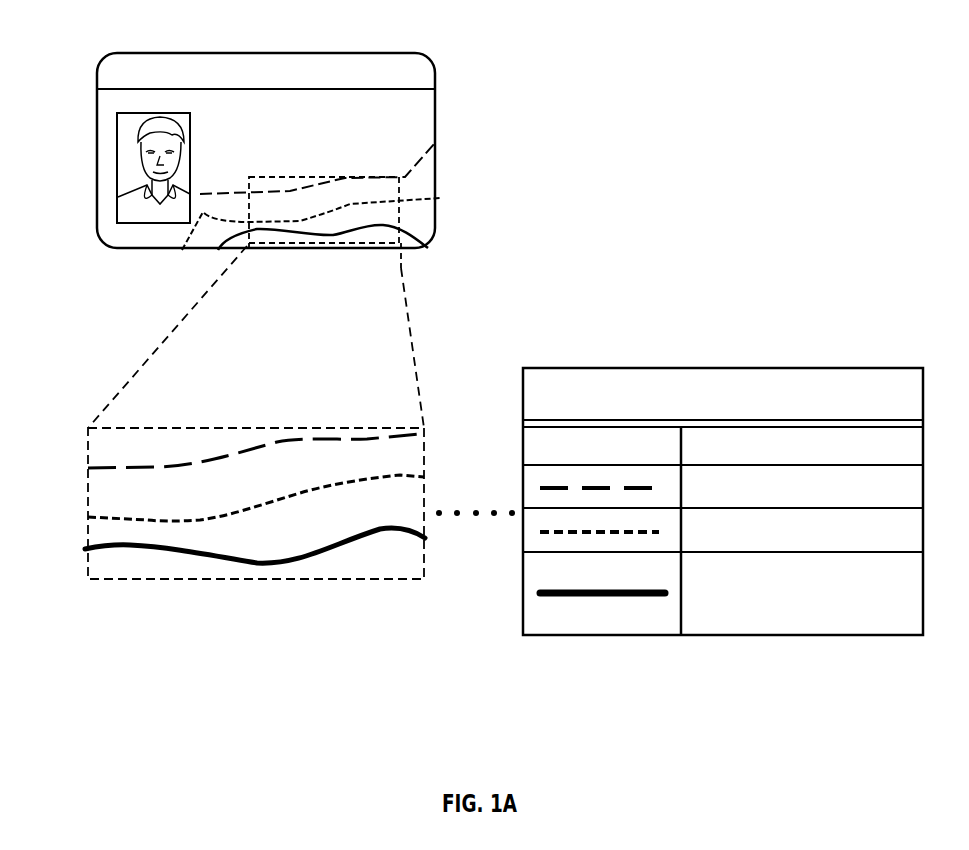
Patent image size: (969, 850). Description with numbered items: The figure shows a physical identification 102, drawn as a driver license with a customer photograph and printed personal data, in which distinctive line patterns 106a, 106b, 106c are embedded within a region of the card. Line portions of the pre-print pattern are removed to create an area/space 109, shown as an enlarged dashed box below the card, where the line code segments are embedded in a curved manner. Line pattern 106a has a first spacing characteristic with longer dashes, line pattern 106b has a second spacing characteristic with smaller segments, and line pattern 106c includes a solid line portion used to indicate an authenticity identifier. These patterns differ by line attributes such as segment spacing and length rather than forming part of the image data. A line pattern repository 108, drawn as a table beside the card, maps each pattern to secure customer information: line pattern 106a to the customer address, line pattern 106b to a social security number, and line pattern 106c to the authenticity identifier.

The identification 102 is at (102, 56).
The line pattern 106a is at (237, 453).
The line pattern 106b is at (153, 522).
The line pattern 106c is at (140, 550).
The line pattern repository 108 is at (523, 386).
The area/space 109 is at (113, 457).